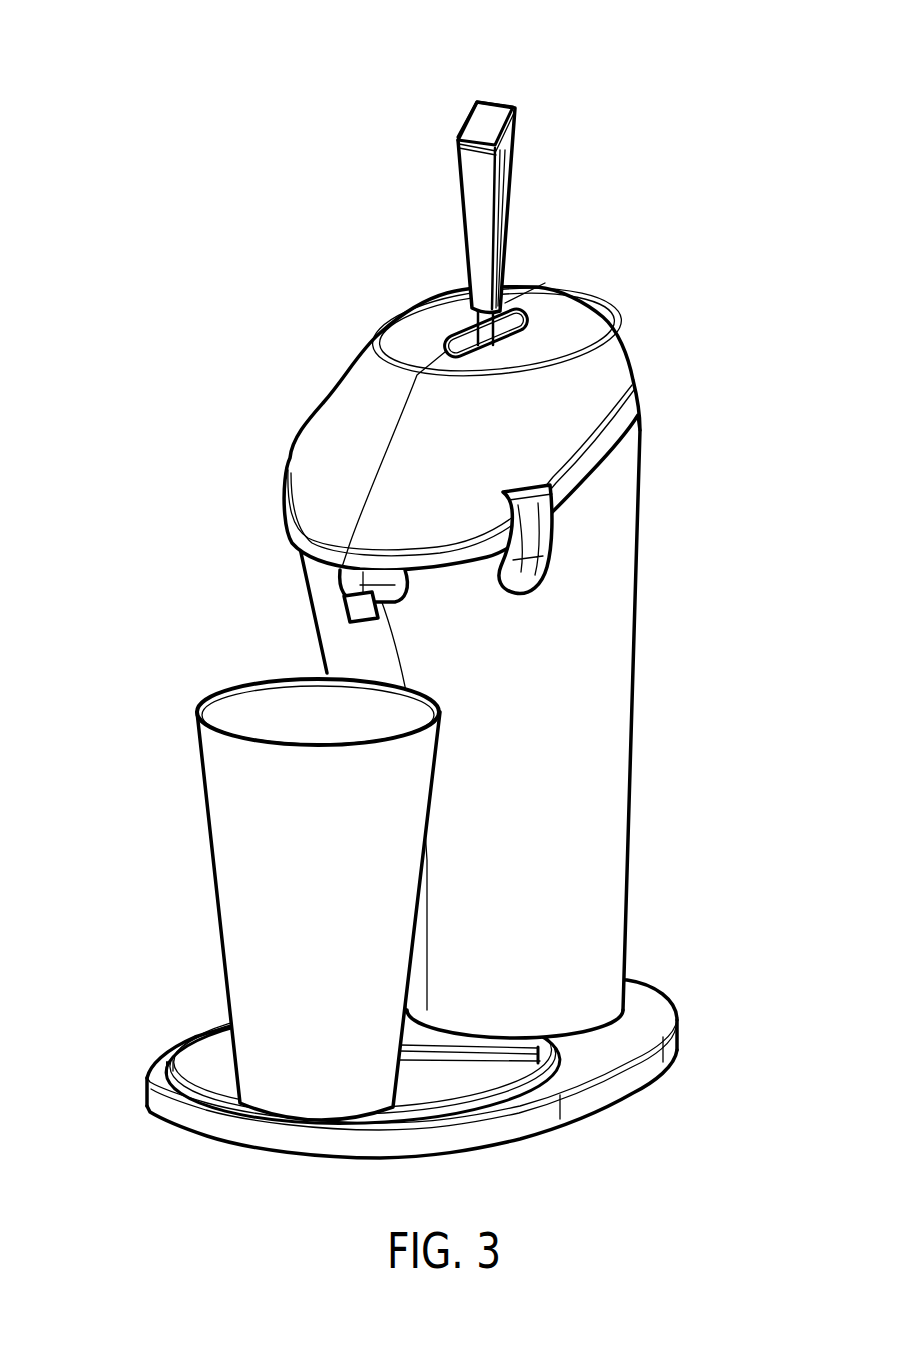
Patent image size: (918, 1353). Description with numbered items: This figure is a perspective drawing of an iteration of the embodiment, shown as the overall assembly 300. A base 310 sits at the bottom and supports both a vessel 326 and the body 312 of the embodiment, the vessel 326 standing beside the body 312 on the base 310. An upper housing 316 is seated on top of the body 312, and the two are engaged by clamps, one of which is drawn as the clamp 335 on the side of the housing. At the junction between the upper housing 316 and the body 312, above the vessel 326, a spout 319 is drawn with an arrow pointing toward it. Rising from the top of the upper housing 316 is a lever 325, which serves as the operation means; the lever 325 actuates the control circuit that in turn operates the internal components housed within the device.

The beverage dispensing system 300 is at (128, 111).
The base 310 is at (642, 1007).
The body 312 is at (593, 723).
The upper housing 316 is at (593, 360).
The spout 319 is at (353, 634).
The lever 325 is at (488, 127).
The vessel 326 is at (242, 863).
The clip 335 is at (533, 543).